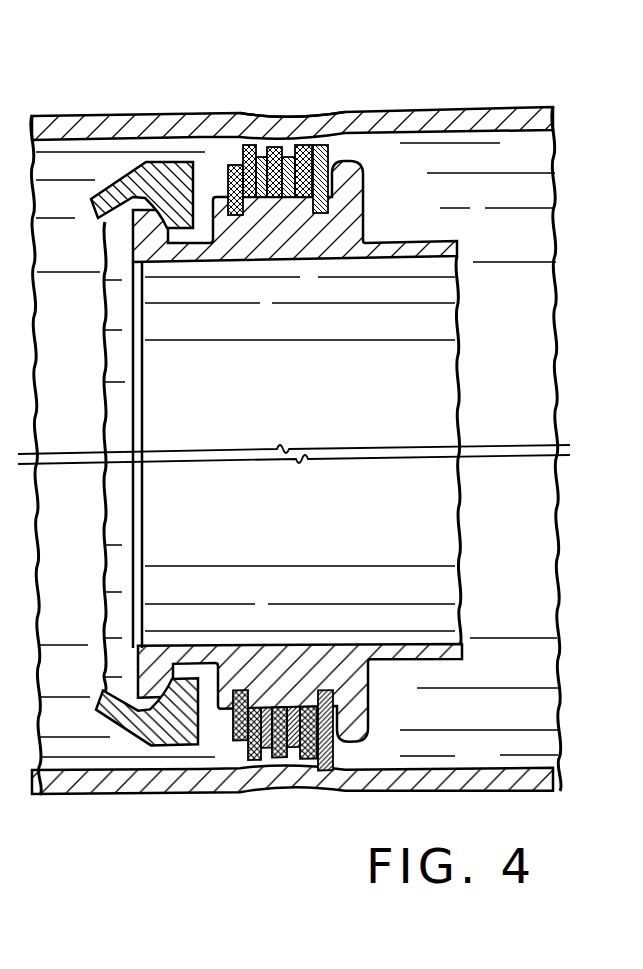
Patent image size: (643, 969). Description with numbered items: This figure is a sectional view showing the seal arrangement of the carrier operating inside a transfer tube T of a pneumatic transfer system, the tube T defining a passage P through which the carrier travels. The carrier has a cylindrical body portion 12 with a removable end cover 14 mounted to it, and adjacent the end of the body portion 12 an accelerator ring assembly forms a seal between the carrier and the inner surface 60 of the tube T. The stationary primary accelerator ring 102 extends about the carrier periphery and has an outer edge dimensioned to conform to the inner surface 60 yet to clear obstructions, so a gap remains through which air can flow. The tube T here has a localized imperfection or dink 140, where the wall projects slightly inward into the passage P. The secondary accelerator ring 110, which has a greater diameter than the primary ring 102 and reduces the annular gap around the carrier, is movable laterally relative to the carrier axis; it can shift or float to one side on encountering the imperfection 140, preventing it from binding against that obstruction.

The cylindrical body portion 12 is at (427, 237).
The removable end cover 14 is at (112, 176).
The inner surface of tube 60 is at (508, 131).
The primary accelerator ring 102 is at (262, 146).
The secondary accelerator ring 110 is at (333, 152).
The dink 140 is at (323, 113).
The transfer tube T is at (510, 108).
The passage P is at (527, 357).